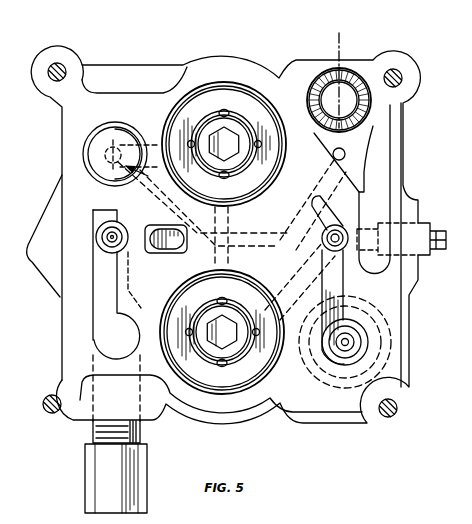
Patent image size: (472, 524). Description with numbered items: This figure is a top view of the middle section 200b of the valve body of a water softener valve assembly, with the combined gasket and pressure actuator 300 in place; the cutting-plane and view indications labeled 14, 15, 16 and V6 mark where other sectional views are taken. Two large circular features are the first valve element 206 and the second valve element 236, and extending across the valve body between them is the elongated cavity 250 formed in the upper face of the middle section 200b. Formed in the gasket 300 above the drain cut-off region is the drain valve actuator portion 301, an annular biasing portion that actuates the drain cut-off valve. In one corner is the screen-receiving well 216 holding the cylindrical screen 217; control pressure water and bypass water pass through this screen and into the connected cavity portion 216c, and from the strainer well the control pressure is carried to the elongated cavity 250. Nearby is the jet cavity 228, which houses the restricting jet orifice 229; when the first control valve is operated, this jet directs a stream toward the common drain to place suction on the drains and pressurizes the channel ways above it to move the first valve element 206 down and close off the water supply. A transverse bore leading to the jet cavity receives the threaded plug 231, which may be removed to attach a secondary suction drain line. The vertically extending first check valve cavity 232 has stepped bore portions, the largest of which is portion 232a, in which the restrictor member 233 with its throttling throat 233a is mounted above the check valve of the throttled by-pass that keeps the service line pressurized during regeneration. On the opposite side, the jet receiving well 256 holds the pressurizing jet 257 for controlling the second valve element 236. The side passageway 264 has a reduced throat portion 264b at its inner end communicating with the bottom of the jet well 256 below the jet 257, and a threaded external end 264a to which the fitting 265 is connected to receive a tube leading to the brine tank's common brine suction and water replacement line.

The middle section of the valve body 200b is at (404, 156).
The first valve element 206 is at (223, 128).
The second valve element 236 is at (238, 345).
The drain valve actuator portion 301 is at (117, 140).
The section line 16 is at (78, 130).
The screen-receiving cavity or well 216 is at (321, 85).
The screen 217 is at (346, 76).
The cavity portion connected with the screen well 216c is at (342, 159).
The section line 15 is at (323, 40).
The section line 14 is at (350, 203).
The view arrow V6 is at (188, 257).
The threaded plug 231 is at (427, 228).
The restricting jet orifice 229 is at (337, 252).
The jet cavity 228 is at (322, 238).
The restrictor member 233 is at (344, 357).
The throttling throat 233a is at (348, 342).
The first check valve cavity 232 is at (386, 312).
The largest diameter stepped bore portion 232a is at (326, 377).
The elongated cavity 250 is at (170, 243).
The jet receiving aperture or well 256 is at (100, 226).
The pressurizing jet 257 is at (102, 243).
The side passageway 264 is at (94, 368).
The reduced throat portion 264b is at (131, 298).
The threaded external end 264a is at (145, 421).
The fitting 265 is at (85, 479).
The combined gasket and pressure actuator 300 is at (78, 316).